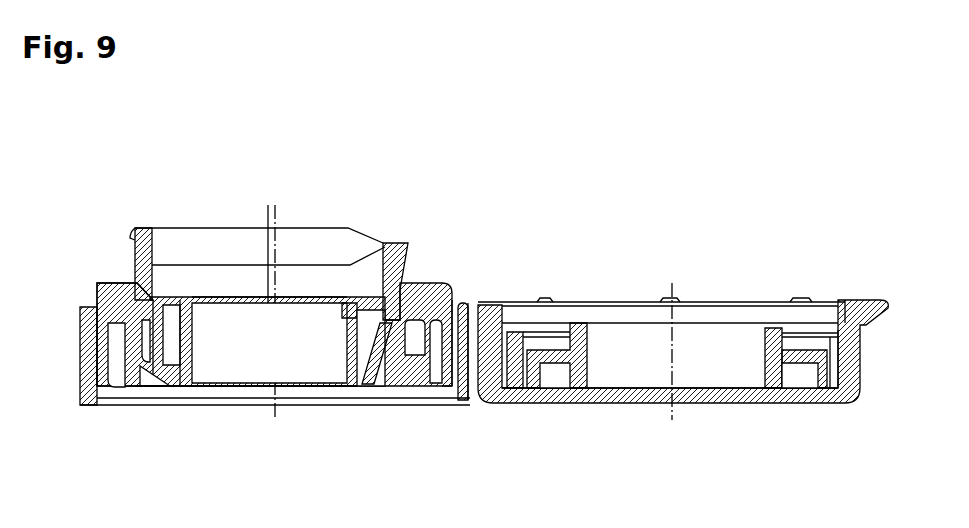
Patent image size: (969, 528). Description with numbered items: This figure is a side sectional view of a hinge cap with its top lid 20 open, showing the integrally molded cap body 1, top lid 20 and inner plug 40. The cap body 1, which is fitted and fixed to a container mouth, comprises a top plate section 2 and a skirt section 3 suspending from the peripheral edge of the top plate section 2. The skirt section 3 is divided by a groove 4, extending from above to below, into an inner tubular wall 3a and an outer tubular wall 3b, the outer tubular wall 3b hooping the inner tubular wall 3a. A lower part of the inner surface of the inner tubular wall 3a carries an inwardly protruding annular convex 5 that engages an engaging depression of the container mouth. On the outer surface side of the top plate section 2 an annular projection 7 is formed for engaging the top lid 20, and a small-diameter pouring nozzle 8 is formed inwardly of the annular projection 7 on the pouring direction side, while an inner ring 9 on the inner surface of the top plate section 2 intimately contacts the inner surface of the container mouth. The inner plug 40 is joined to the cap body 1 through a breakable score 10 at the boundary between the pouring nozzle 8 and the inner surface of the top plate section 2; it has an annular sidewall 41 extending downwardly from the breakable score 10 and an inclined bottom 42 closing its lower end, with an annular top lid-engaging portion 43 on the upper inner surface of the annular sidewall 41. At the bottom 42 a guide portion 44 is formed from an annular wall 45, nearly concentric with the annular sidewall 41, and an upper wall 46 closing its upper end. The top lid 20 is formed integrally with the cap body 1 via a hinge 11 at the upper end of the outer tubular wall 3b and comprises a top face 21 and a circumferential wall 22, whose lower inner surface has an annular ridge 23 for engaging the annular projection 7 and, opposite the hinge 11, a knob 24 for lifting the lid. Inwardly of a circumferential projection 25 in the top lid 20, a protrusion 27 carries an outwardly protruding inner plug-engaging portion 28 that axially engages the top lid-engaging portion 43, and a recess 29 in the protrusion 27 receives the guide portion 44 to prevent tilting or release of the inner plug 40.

The cap body 1 is at (421, 215).
The top plate section 2 is at (418, 300).
The skirt section 3 is at (488, 460).
The inner tubular wall 3a is at (428, 406).
The outer tubular wall 3b is at (464, 406).
The groove 4 is at (458, 302).
The annular convex 5 is at (125, 403).
The annular projection 7 is at (108, 292).
The pouring nozzle 8 is at (140, 226).
The inner ring 9 is at (392, 388).
The breakable score 10 is at (137, 296).
The hinge 11 is at (478, 304).
The top lid 20 is at (812, 262).
The top face 21 is at (703, 405).
The circumferential wall 22 is at (865, 345).
The annular ridge 23 is at (517, 392).
The knob 24 is at (880, 298).
The circumferential projection 25 is at (832, 404).
The protrusion 27 is at (790, 390).
The inner plug-engaging portion 28 is at (787, 323).
The recess 29 is at (717, 325).
The inner plug 40 is at (162, 404).
The annular sidewall 41 is at (158, 404).
The bottom 42 is at (362, 388).
The top lid-engaging portion 43 is at (173, 296).
The guide portion 44 is at (300, 297).
The annular wall 45 is at (195, 335).
The upper wall 46 is at (248, 296).